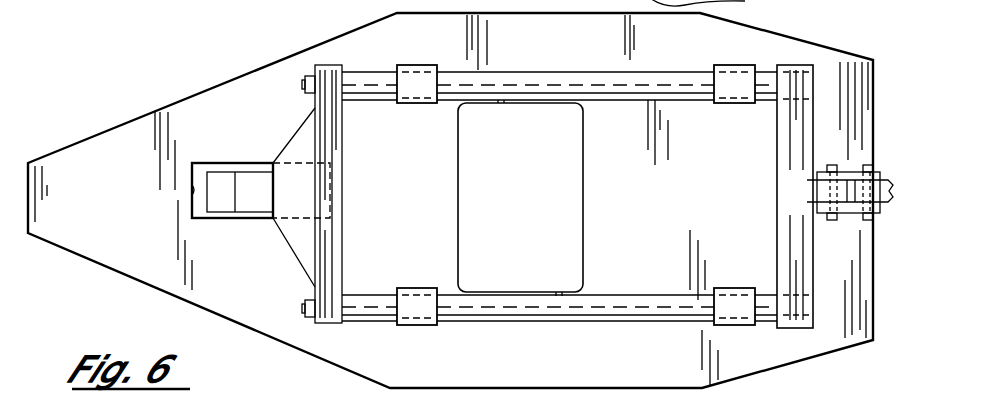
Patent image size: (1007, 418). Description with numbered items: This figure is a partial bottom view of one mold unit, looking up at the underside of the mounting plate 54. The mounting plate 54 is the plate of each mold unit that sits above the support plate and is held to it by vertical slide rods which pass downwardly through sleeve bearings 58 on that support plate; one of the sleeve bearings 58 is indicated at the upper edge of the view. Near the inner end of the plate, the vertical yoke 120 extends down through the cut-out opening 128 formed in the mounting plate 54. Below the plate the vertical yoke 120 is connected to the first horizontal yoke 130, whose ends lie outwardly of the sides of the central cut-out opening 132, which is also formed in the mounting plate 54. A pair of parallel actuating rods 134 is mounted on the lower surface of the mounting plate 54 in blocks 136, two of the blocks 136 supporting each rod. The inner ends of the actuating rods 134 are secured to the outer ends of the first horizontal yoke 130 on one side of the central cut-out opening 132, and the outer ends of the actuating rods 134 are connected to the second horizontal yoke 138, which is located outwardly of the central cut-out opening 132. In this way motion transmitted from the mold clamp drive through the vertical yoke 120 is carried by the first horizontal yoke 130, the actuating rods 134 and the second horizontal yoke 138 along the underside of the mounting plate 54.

The mounting plate 54 is at (72, 158).
The sleeve bearings 58 is at (720, 8).
The vertical yoke 120 is at (252, 188).
The cut-out opening 128 is at (193, 190).
The first horizontal yoke 130 is at (303, 240).
The central cut-out opening 132 is at (578, 200).
The actuating rods 134 is at (525, 86).
The blocks 136 is at (415, 103).
The second horizontal yoke 138 is at (803, 120).